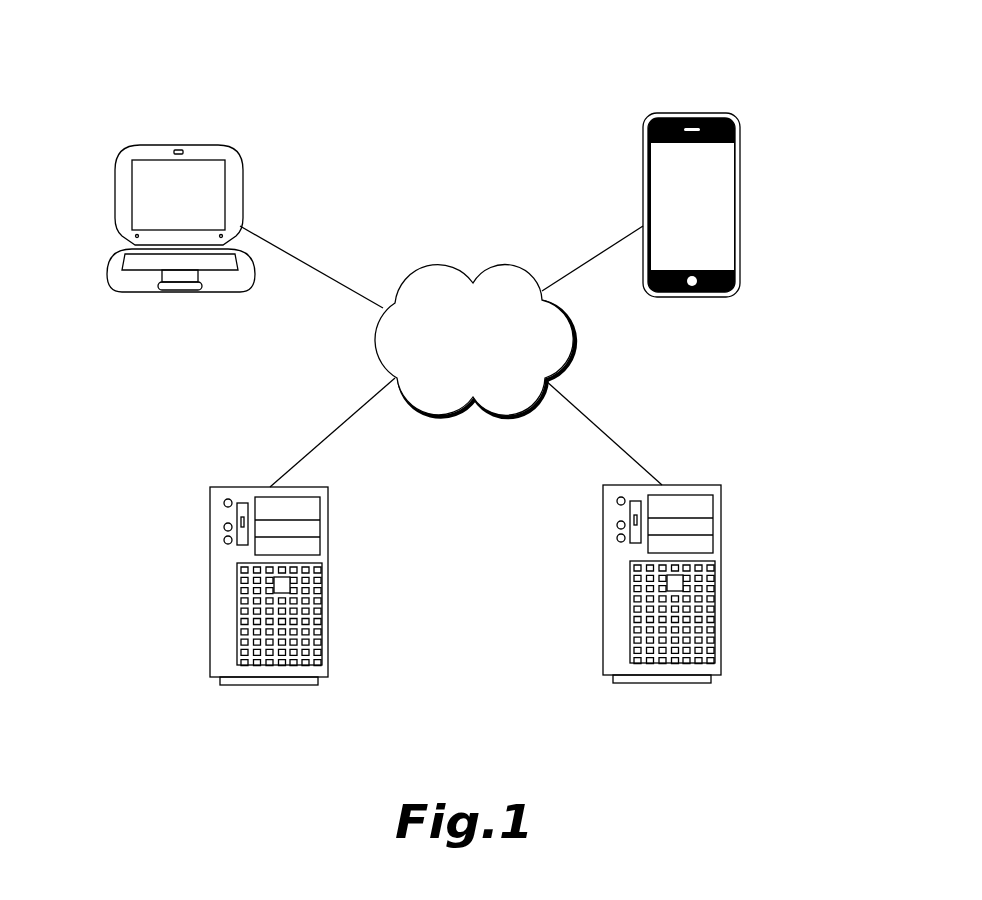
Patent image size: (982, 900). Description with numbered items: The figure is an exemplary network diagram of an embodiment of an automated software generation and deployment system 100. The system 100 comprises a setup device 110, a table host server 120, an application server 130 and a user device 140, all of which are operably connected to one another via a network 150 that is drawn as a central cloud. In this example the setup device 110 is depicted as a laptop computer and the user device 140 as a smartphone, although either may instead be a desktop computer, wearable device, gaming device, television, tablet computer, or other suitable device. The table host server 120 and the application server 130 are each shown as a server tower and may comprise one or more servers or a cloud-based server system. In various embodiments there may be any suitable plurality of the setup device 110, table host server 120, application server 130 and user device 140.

The automated software generation and deployment system 100 is at (561, 97).
The setup device 110 is at (118, 220).
The table host server 120 is at (210, 585).
The application server 130 is at (722, 583).
The user device 140 is at (740, 210).
The network 150 is at (374, 338).